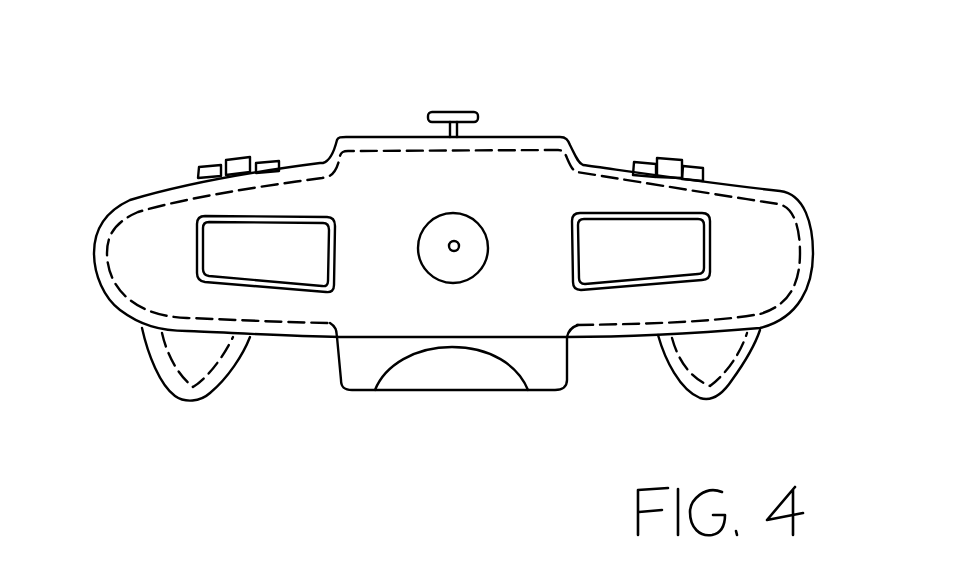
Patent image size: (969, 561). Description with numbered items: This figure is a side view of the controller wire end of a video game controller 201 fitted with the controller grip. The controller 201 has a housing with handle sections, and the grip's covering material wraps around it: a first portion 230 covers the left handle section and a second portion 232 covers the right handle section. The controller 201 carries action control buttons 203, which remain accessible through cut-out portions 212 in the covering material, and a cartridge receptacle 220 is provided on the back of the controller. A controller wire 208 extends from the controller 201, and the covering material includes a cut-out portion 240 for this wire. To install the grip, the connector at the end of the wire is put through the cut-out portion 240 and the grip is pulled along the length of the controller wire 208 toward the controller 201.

The controller 201 is at (780, 217).
The action control buttons 203 is at (212, 247).
The controller wire 208 is at (456, 242).
The cut-out portions 212 is at (197, 273).
The cartridge receptacle 220 is at (567, 378).
The first portion 230 is at (735, 392).
The second portion 232 is at (167, 387).
The cut-out portion 240 is at (428, 275).